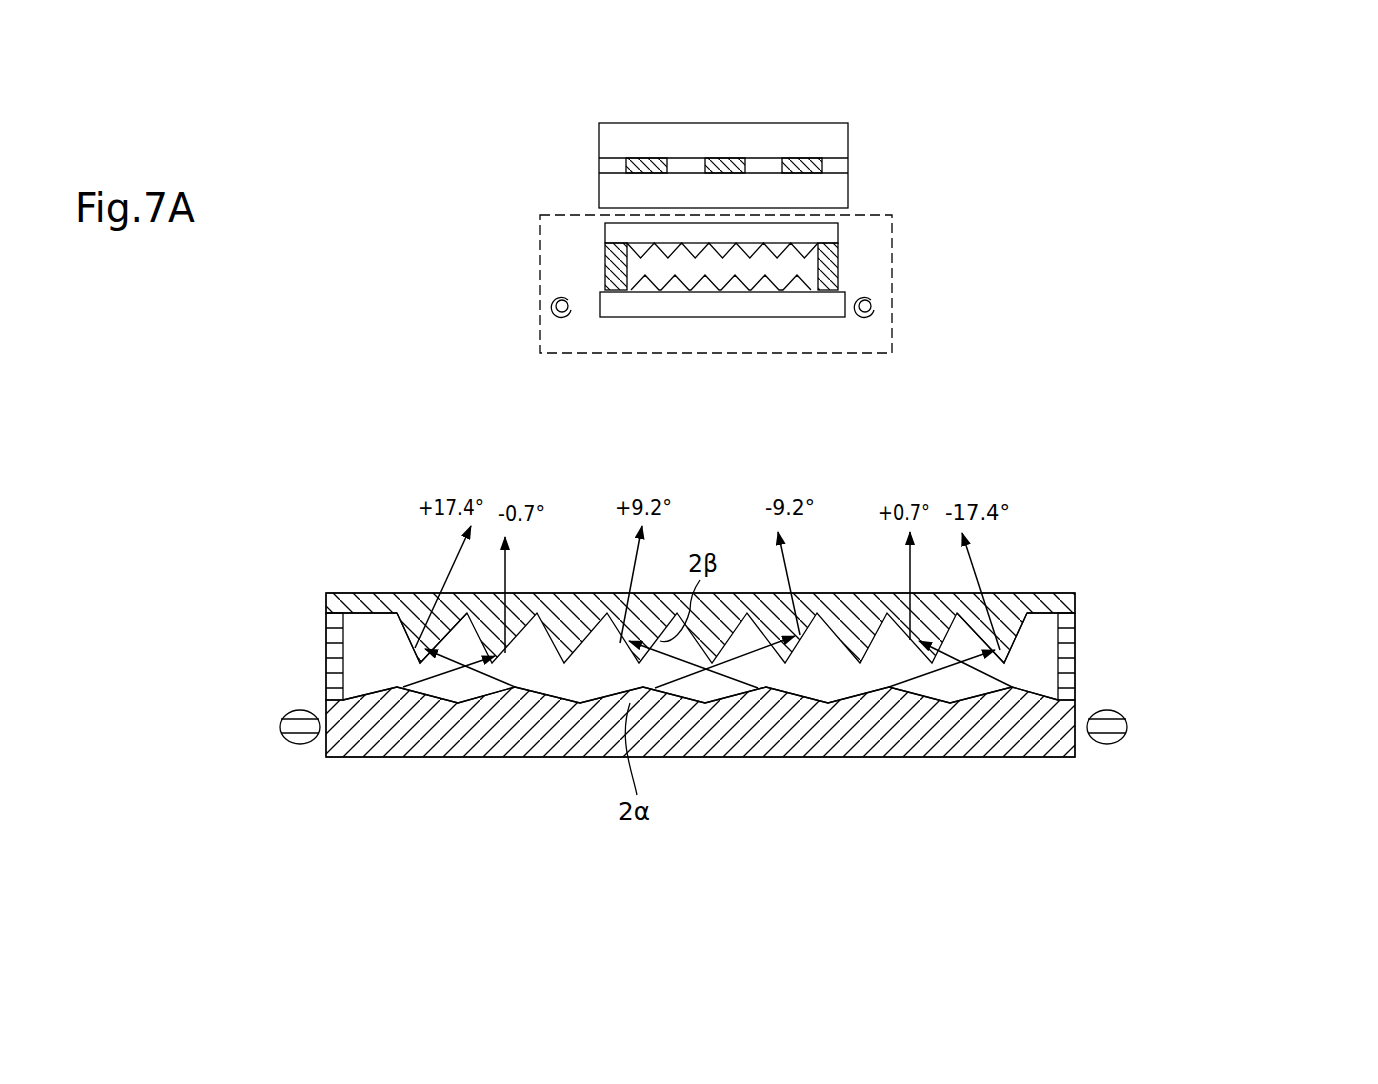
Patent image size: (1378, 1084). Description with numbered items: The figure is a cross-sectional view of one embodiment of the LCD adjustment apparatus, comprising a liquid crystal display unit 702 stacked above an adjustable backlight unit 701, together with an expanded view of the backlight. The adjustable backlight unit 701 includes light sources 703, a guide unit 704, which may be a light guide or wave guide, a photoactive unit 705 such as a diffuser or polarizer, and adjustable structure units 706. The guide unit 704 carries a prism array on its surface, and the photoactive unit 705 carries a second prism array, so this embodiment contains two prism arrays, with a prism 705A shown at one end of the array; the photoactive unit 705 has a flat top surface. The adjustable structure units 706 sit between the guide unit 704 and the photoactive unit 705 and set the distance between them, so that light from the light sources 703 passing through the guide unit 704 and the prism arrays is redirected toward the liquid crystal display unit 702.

The adjustable backlight unit 701 is at (538, 255).
The LCD panel 702 is at (848, 123).
The light sources 703 is at (873, 312).
The guide unit 704 is at (605, 318).
The photoactive unit 705 is at (838, 228).
The prism 705A is at (400, 632).
The adjustable structure unit 706 is at (605, 280).